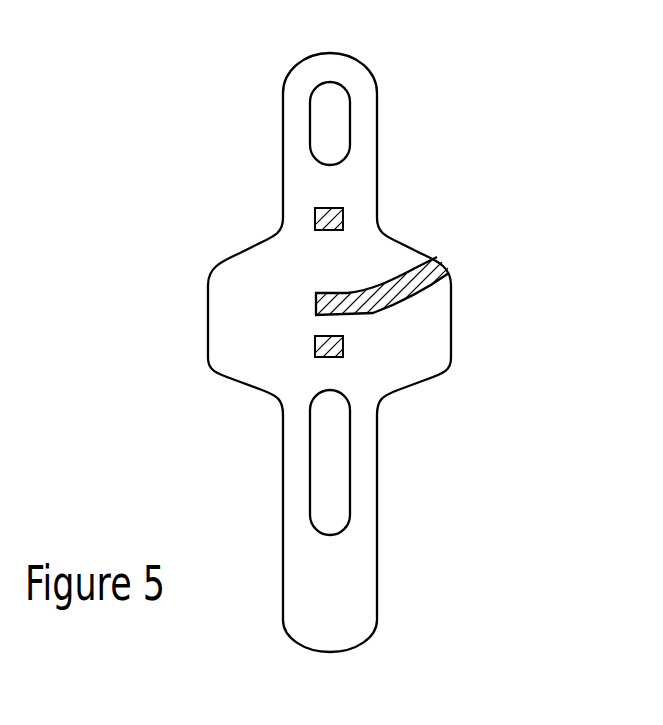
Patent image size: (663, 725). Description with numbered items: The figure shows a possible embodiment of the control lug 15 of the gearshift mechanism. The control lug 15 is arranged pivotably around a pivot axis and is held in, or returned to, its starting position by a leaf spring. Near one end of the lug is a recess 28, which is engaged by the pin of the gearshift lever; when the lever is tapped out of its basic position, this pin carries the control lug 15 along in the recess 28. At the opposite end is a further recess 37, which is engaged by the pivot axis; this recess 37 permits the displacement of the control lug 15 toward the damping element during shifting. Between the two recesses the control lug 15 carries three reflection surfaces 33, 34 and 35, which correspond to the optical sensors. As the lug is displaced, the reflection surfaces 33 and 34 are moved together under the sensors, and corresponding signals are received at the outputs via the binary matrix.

The control lug 15 is at (362, 563).
The recess 28 is at (337, 487).
The reflection surface 33 is at (343, 217).
The reflection surface 34 is at (436, 259).
The reflection surface 35 is at (343, 341).
The recess 37 is at (338, 117).